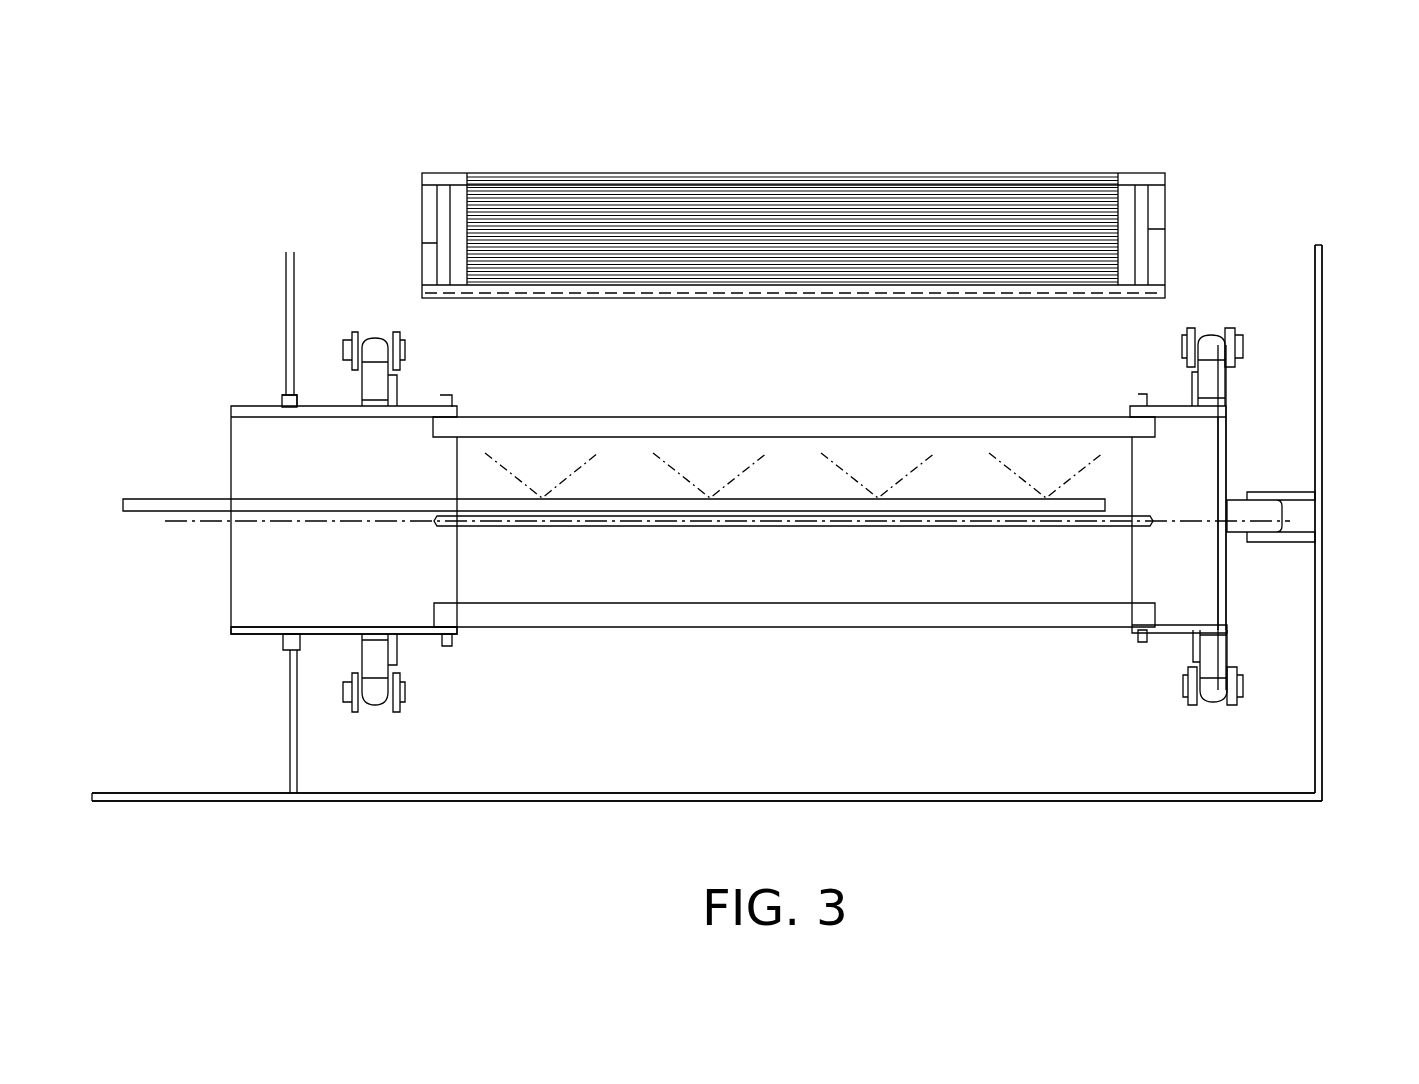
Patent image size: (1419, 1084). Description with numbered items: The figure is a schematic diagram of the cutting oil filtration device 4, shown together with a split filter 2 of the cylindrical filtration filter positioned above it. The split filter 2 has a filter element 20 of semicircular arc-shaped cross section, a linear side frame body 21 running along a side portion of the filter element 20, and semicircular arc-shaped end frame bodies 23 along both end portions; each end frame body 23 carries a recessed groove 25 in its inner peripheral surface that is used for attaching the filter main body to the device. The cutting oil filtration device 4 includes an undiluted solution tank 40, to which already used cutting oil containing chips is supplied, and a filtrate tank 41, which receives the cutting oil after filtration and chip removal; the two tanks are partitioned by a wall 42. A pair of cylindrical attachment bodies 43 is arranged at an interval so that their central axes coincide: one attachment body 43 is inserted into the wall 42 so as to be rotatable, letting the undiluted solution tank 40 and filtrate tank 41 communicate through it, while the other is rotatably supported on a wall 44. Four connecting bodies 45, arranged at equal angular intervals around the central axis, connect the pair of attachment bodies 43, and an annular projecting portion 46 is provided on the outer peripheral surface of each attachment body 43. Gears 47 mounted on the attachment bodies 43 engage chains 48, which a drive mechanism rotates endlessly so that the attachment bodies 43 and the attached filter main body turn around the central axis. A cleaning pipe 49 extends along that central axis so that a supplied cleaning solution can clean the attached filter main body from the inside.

The split filter 2 is at (699, 164).
The filter element 20 is at (908, 192).
The side frame body 21 is at (1165, 287).
The end frame body 23 is at (422, 210).
The recessed groove 25 is at (422, 243).
The cutting oil filtration device 4 is at (1327, 211).
The undiluted solution tank 40 is at (707, 763).
The filtrate tank 41 is at (172, 765).
The wall 42 is at (290, 728).
The attachment body 43 is at (325, 636).
The wall 44 is at (1322, 730).
The connecting body 45 is at (1076, 415).
The annular projecting portion 46 is at (447, 647).
The gear 47 is at (385, 653).
The chain 48 is at (358, 712).
The cleaning pipe 49 is at (157, 497).